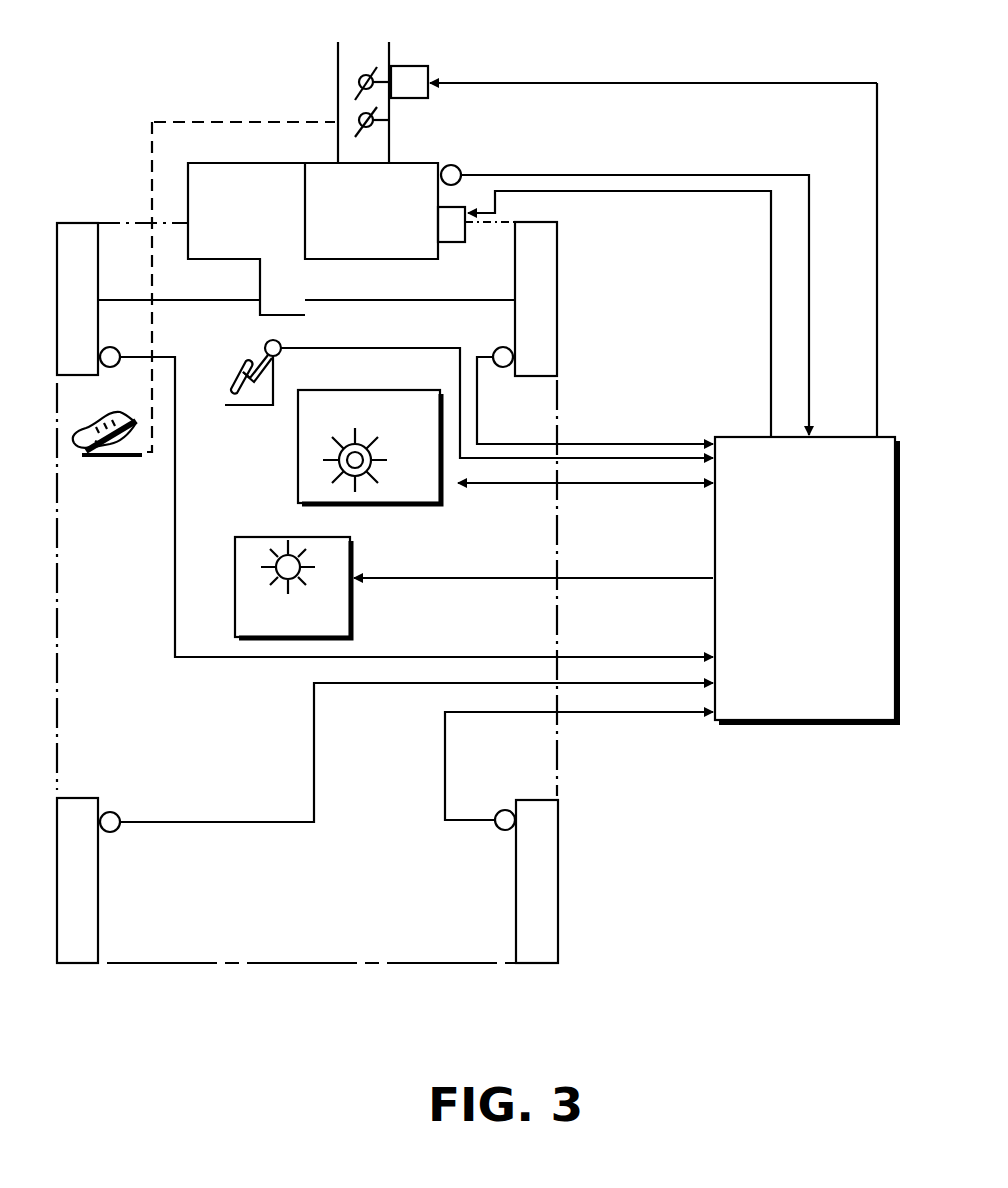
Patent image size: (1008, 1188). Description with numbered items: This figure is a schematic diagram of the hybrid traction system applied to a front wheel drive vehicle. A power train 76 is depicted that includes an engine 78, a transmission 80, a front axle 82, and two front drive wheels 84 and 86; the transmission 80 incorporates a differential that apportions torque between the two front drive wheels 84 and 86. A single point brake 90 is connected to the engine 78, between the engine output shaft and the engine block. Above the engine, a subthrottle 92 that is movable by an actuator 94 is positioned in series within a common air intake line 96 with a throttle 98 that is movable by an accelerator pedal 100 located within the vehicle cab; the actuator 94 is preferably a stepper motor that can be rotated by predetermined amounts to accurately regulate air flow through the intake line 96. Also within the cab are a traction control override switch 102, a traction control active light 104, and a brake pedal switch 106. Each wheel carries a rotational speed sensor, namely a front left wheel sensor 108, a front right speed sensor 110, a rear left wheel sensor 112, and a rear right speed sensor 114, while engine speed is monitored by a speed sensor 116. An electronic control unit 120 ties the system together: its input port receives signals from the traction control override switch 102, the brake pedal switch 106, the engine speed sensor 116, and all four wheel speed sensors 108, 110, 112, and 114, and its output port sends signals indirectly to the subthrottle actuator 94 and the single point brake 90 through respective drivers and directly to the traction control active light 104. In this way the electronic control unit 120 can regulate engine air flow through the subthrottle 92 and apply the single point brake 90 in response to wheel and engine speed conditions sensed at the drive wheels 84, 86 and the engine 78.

The power train 76 is at (313, 221).
The engine 78 is at (365, 251).
The transmission 80 is at (245, 247).
The front axle 82 is at (403, 303).
The front drive wheel 84 is at (60, 268).
The front drive wheel 86 is at (548, 256).
The single point brake 90 is at (459, 243).
The subthrottle 92 is at (362, 75).
The actuator 94 is at (412, 65).
The common air intake line 96 is at (337, 60).
The throttle 98 is at (389, 116).
The accelerator pedal 100 is at (104, 458).
The traction control override switch 102 is at (376, 390).
The traction control active light 104 is at (352, 552).
The brake pedal switch 106 is at (266, 338).
The front left wheel sensor 108 is at (127, 333).
The front right speed sensor 110 is at (504, 346).
The rear left wheel sensor 112 is at (117, 812).
The rear right speed sensor 114 is at (505, 810).
The engine speed sensor 116 is at (458, 168).
The electronic control unit 120 is at (834, 643).